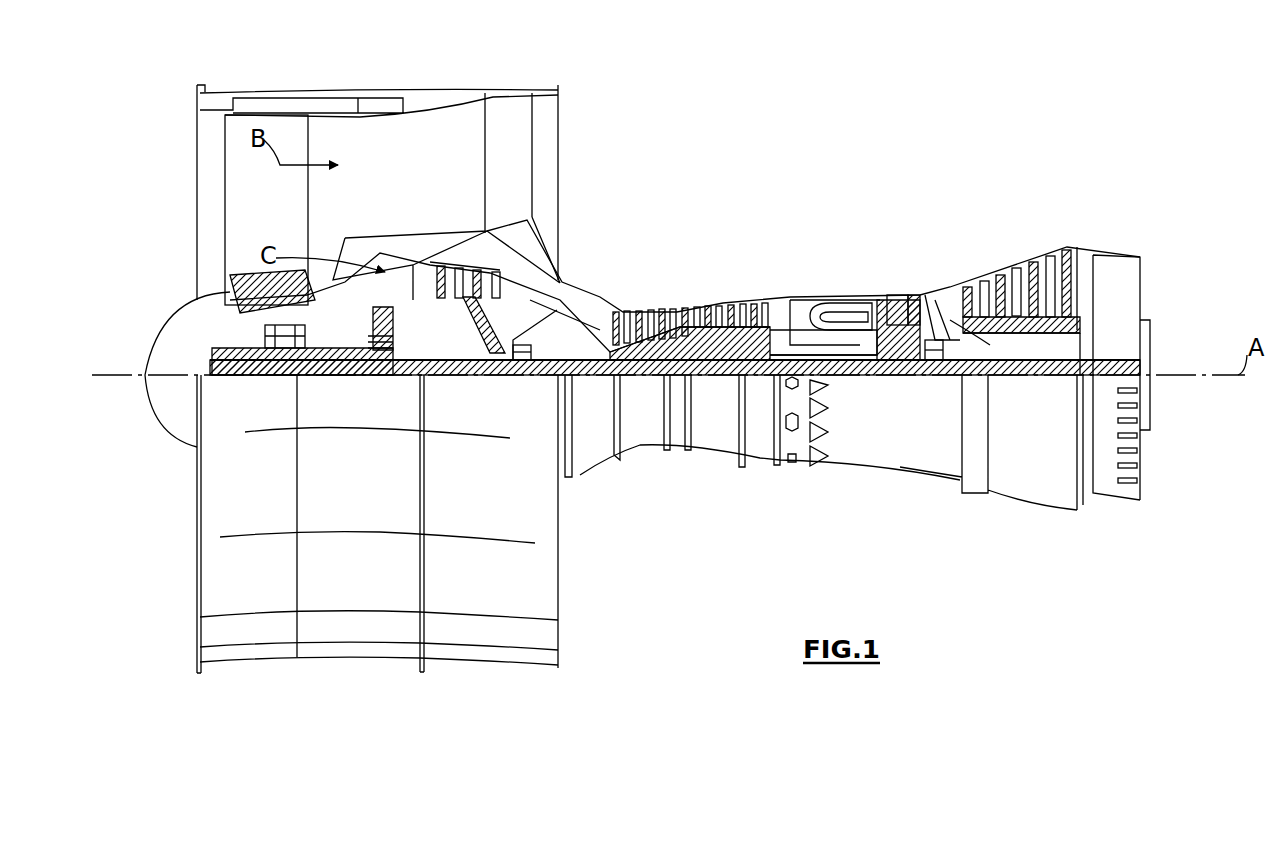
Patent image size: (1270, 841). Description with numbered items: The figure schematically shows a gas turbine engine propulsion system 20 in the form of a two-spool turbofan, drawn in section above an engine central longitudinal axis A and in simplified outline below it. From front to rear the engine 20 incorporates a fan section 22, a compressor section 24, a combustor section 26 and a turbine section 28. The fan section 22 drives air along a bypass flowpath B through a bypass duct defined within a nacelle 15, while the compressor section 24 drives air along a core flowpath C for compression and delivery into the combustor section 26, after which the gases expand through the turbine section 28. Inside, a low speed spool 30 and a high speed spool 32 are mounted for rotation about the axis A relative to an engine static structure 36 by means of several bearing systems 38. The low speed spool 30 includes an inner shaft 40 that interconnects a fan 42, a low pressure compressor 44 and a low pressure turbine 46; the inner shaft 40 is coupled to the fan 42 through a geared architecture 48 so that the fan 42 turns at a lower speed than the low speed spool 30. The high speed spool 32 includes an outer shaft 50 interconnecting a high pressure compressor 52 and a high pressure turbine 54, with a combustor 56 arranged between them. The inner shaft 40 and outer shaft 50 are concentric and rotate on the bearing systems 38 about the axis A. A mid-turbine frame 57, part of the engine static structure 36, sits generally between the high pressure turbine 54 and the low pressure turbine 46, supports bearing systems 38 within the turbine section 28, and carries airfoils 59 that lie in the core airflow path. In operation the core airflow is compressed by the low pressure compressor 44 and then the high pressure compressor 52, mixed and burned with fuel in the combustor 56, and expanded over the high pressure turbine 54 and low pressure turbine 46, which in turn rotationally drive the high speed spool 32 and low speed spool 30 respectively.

The nacelle 15 is at (380, 97).
The gas turbine engine propulsion system 20 is at (837, 143).
The fan section 22 is at (307, 80).
The compressor section 24 is at (599, 279).
The combustor section 26 is at (840, 279).
The turbine section 28 is at (1056, 337).
The low speed spool 30 is at (717, 385).
The high speed spool 32 is at (762, 337).
The engine static structure 36 is at (758, 470).
The bearing systems 38 is at (523, 370).
The inner shaft 40 is at (580, 377).
The fan 42 is at (279, 218).
The low pressure compressor 44 is at (478, 282).
The low pressure turbine 46 is at (1025, 260).
The geared architecture 48 is at (380, 368).
The outer shaft 50 is at (845, 362).
The high pressure compressor 52 is at (687, 350).
The high pressure turbine 54 is at (897, 295).
The combustor 56 is at (833, 317).
The mid-turbine frame 57 is at (940, 283).
The airfoils 59 is at (965, 337).